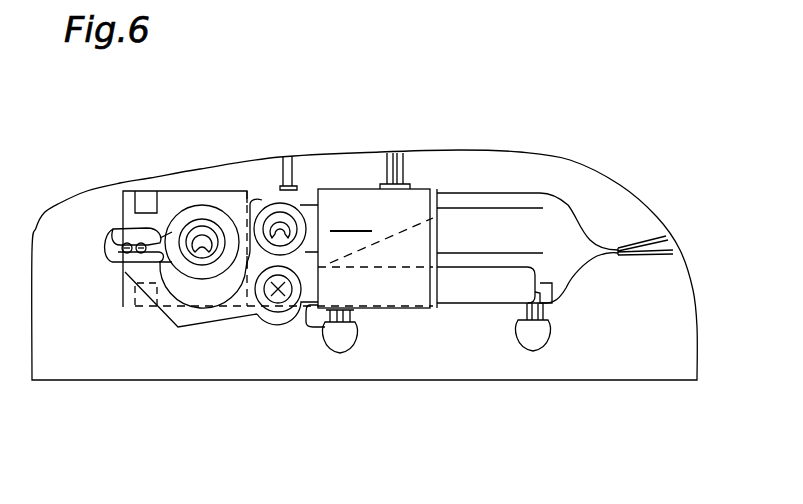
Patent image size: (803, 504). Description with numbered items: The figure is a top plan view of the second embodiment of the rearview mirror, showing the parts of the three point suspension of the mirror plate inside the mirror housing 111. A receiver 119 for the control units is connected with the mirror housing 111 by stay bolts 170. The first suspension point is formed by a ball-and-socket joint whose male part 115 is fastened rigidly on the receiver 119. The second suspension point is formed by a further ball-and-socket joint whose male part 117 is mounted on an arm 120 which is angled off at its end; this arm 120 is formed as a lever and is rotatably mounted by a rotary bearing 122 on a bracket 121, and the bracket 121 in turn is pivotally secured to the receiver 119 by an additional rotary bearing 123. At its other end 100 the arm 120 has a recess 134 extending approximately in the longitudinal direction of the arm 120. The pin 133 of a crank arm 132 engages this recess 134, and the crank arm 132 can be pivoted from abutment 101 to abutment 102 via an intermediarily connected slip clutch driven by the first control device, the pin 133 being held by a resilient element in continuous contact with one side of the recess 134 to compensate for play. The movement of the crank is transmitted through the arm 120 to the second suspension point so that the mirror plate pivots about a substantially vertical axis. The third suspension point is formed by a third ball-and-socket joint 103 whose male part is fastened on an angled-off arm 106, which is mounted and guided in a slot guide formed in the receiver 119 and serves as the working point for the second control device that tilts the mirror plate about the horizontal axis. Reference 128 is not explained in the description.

The other end 100 is at (178, 326).
The abutment 101 is at (148, 201).
The abutment 102 is at (143, 297).
The ball-and-socket joint 103 is at (117, 263).
The angled-off arm 106 is at (310, 323).
The mirror housing 111 is at (575, 158).
The male part 115 is at (363, 419).
The male part 117 is at (533, 336).
The receiver 119 is at (377, 246).
The arm 120 is at (483, 293).
The bracket 121 is at (272, 225).
The rotary bearing 122 is at (277, 303).
The additional rotary bearing 123 is at (281, 224).
The coupling 128 is at (414, 257).
The crank arm 132 is at (205, 274).
The pin 133 is at (140, 242).
The recess 134 is at (125, 242).
The stay bolts 170 is at (390, 174).